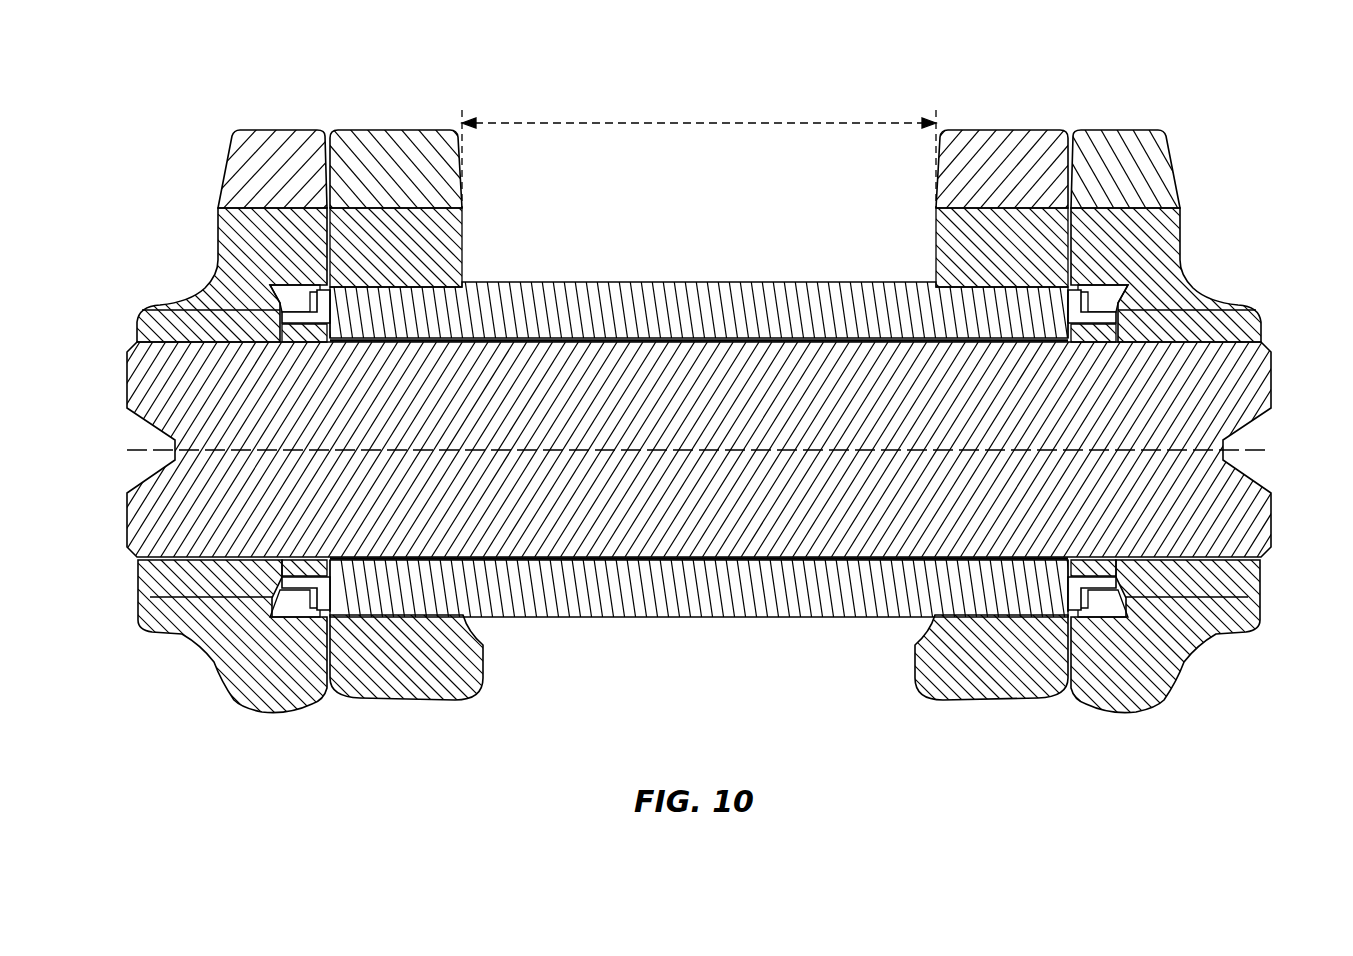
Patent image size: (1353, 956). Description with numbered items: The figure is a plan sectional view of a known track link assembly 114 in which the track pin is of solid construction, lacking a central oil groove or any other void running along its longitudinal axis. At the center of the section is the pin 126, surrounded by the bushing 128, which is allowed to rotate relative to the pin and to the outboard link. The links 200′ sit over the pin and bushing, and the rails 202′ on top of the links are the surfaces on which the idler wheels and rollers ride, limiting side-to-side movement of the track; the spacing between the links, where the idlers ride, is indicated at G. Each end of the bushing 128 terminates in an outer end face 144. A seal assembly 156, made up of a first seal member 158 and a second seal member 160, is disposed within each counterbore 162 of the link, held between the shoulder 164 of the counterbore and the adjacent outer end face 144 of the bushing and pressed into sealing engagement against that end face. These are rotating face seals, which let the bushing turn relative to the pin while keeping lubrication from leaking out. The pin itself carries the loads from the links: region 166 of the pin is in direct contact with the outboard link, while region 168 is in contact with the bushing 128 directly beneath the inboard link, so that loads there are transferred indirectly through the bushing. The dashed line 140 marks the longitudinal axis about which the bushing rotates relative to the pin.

The track link assembly 114 is at (1133, 131).
The pin 126 is at (680, 512).
The bushing 128 is at (680, 599).
The axis of rotation 140 is at (1255, 452).
The outer end face 144 is at (330, 332).
The seal assembly 156 is at (285, 271).
The first seal member 158 is at (285, 292).
The second seal member 160 is at (318, 306).
The counterbore 162 is at (278, 307).
The shoulder 164 is at (278, 314).
The region 166 is at (200, 350).
The region 168 is at (356, 332).
The link 200′ is at (398, 138).
The rail 202′ is at (373, 130).
The gap dimension G is at (686, 116).